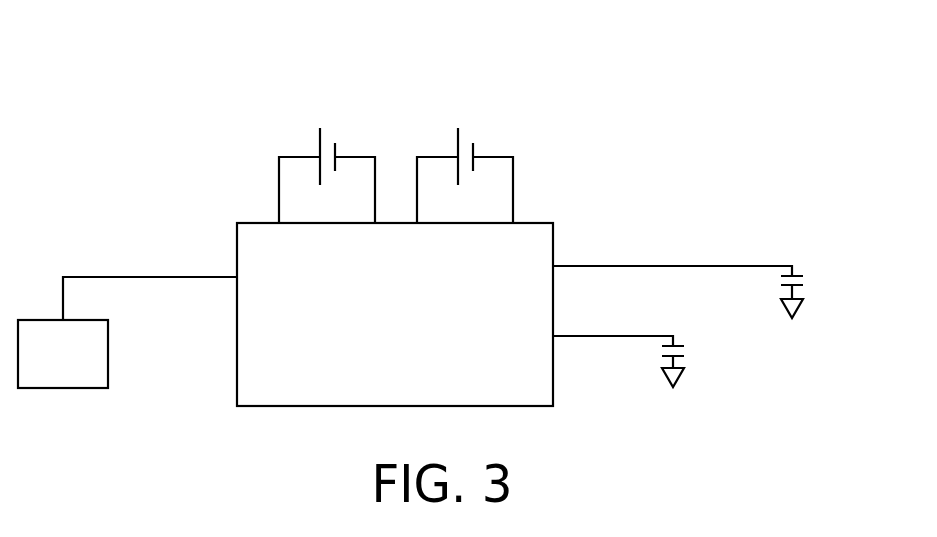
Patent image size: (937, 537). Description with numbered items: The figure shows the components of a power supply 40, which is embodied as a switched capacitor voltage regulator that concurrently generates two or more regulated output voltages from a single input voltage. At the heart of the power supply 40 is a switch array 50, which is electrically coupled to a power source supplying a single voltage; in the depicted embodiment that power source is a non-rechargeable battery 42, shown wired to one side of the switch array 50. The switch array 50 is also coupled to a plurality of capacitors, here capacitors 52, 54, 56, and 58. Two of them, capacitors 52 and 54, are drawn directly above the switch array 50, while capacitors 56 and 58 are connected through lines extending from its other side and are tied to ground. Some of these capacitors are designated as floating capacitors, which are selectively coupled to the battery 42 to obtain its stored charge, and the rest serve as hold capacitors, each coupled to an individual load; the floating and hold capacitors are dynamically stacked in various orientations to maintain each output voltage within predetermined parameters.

The power supply 40 is at (160, 87).
The battery 42 is at (80, 381).
The switch array 50 is at (382, 344).
The capacitor 52 is at (327, 162).
The capacitor 54 is at (465, 162).
The capacitor 56 is at (633, 361).
The capacitor 58 is at (693, 292).